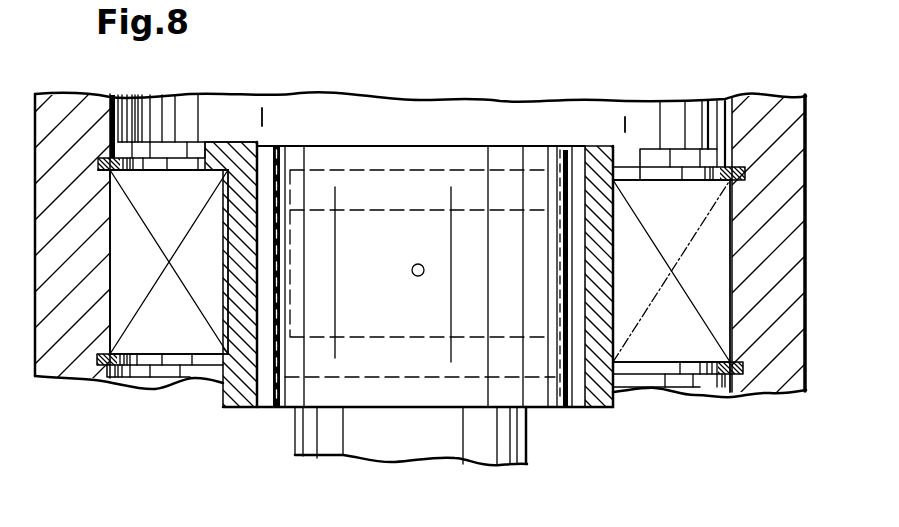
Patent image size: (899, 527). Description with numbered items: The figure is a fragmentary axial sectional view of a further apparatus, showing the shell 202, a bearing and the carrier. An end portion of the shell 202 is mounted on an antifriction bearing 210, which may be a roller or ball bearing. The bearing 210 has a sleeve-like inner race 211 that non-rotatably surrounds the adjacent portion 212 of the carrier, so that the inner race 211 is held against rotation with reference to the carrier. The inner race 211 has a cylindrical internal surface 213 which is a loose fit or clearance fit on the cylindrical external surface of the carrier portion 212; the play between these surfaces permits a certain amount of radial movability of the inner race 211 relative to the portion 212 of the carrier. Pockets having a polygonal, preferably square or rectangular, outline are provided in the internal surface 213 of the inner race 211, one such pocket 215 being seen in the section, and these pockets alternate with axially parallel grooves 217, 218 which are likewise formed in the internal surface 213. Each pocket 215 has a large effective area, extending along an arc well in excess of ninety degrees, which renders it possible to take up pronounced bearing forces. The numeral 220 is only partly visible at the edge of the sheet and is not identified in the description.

The shell 202 is at (778, 115).
The antifriction bearing 210 is at (715, 263).
The inner race 211 is at (223, 405).
The portion of the carrier 212 is at (550, 397).
The internal surface 213 is at (556, 178).
The pocket 215 is at (370, 220).
The axially parallel groove 217 is at (260, 163).
The axially parallel groove 218 is at (622, 396).
The top plate 220 is at (420, 66).